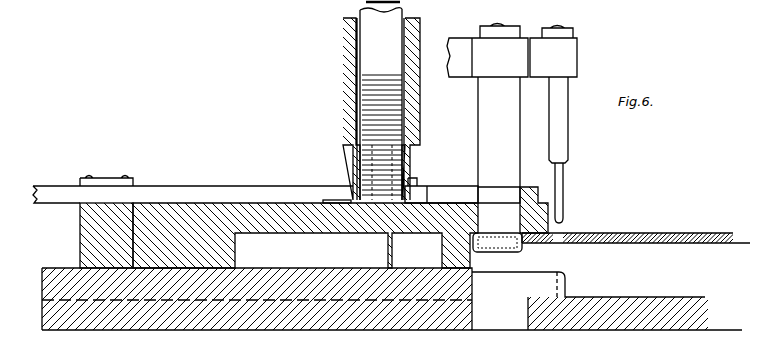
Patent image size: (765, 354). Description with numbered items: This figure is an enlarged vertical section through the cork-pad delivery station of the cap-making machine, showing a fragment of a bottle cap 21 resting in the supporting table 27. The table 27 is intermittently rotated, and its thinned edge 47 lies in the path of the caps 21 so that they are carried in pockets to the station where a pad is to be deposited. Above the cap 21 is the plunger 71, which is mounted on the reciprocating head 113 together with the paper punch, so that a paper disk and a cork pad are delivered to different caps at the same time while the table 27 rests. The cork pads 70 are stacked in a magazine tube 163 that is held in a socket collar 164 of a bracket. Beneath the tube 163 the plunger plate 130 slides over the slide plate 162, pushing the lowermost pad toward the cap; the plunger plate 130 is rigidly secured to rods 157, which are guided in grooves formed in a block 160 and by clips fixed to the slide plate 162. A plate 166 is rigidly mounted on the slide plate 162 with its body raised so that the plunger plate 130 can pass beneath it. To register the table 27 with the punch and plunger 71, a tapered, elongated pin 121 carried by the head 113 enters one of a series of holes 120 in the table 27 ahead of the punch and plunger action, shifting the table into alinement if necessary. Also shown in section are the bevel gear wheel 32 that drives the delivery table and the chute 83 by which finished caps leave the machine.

The tube 163 is at (411, 17).
The socket collar 164 is at (348, 79).
The cork pads 70 is at (381, 82).
The reciprocating head 113 is at (487, 62).
The plunger 71 is at (478, 133).
The plate 166 is at (444, 191).
The pin 121 is at (563, 190).
The rods 157 is at (187, 190).
The plunger plate 130 is at (247, 201).
The block 160 is at (88, 232).
The slide plate 162 is at (303, 218).
The supporting table 27 is at (684, 234).
The caps 21 is at (507, 249).
The thinned edge 47 is at (532, 243).
The holes 120 is at (563, 239).
The bevel gear wheel 32 is at (567, 287).
The chute 83 is at (505, 320).